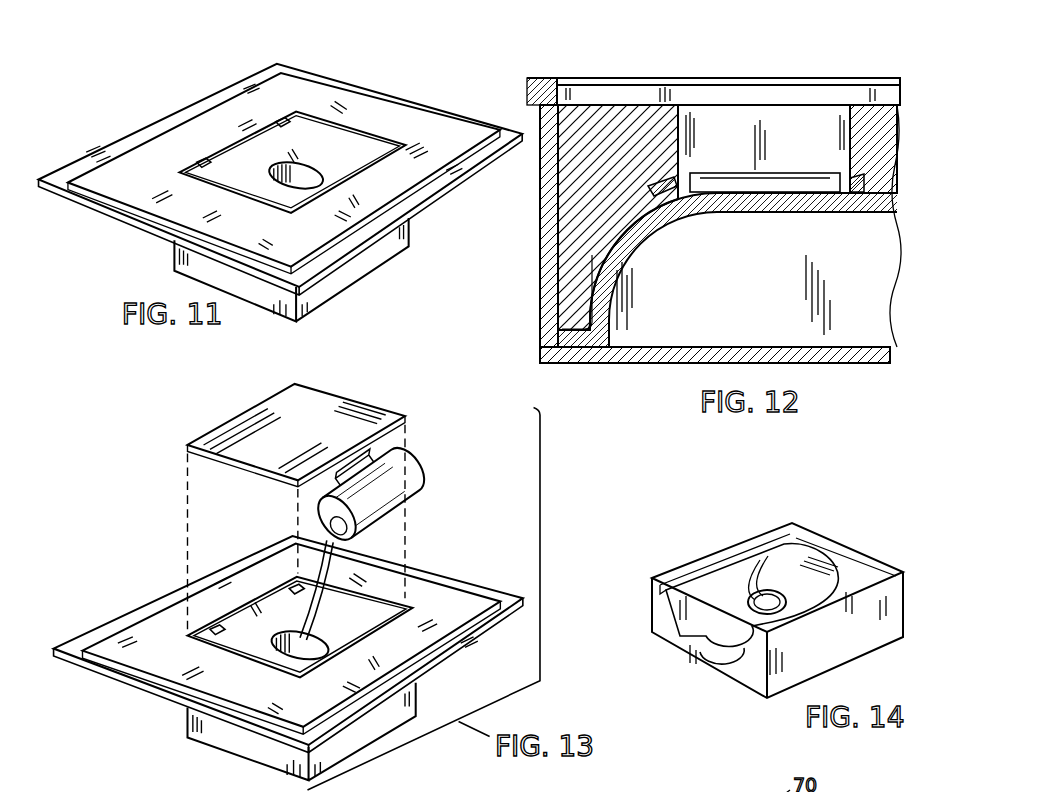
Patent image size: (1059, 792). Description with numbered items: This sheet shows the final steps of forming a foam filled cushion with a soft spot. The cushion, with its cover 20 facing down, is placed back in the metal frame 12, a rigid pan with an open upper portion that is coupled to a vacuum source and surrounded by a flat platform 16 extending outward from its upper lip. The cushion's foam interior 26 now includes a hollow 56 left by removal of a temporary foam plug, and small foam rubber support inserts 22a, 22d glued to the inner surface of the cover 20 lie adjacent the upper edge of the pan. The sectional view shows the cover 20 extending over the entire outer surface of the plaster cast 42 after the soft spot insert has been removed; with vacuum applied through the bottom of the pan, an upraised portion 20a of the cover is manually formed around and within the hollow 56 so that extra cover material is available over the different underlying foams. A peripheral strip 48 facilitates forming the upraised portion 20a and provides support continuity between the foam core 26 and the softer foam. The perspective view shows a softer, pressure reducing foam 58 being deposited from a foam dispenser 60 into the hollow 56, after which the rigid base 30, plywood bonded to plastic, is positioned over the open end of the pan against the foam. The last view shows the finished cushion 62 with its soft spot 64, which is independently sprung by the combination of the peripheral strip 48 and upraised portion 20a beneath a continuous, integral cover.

In FIG. 11, the metal frame 12 is at (188, 262).
In FIG. 12, the metal frame 12 is at (608, 363).
In FIG. 13, the metal frame 12 is at (180, 700).
In FIG. 11, the flat platform 16 is at (58, 172).
In FIG. 13, the flat platform 16 is at (120, 600).
In FIG. 11, the cover 20 is at (150, 152).
In FIG. 12, the cover 20 is at (594, 292).
In FIG. 13, the cover 20 is at (153, 600).
In FIG. 12, the upraised portion 20a is at (718, 184).
In FIG. 11, the support insert 22a is at (277, 118).
In FIG. 13, the support insert 22a is at (272, 570).
In FIG. 11, the support insert 22d is at (198, 158).
In FIG. 13, the support insert 22d is at (200, 610).
In FIG. 11, the foam 26 is at (318, 122).
In FIG. 12, the foam 26 is at (596, 118).
In FIG. 13, the foam 26 is at (432, 619).
In FIG. 13, the rigid base 30 is at (289, 437).
In FIG. 12, the plaster cast 42 is at (654, 232).
In FIG. 12, the peripheral strip 48 is at (856, 190).
In FIG. 11, the hollow 56 is at (297, 181).
In FIG. 12, the hollow 56 is at (728, 118).
In FIG. 13, the hollow 56 is at (285, 645).
In FIG. 13, the softer foam 58 is at (315, 640).
In FIG. 13, the foam dispenser 60 is at (398, 463).
In FIG. 14, the cushion 62 is at (698, 553).
In FIG. 14, the soft spot 64 is at (760, 598).